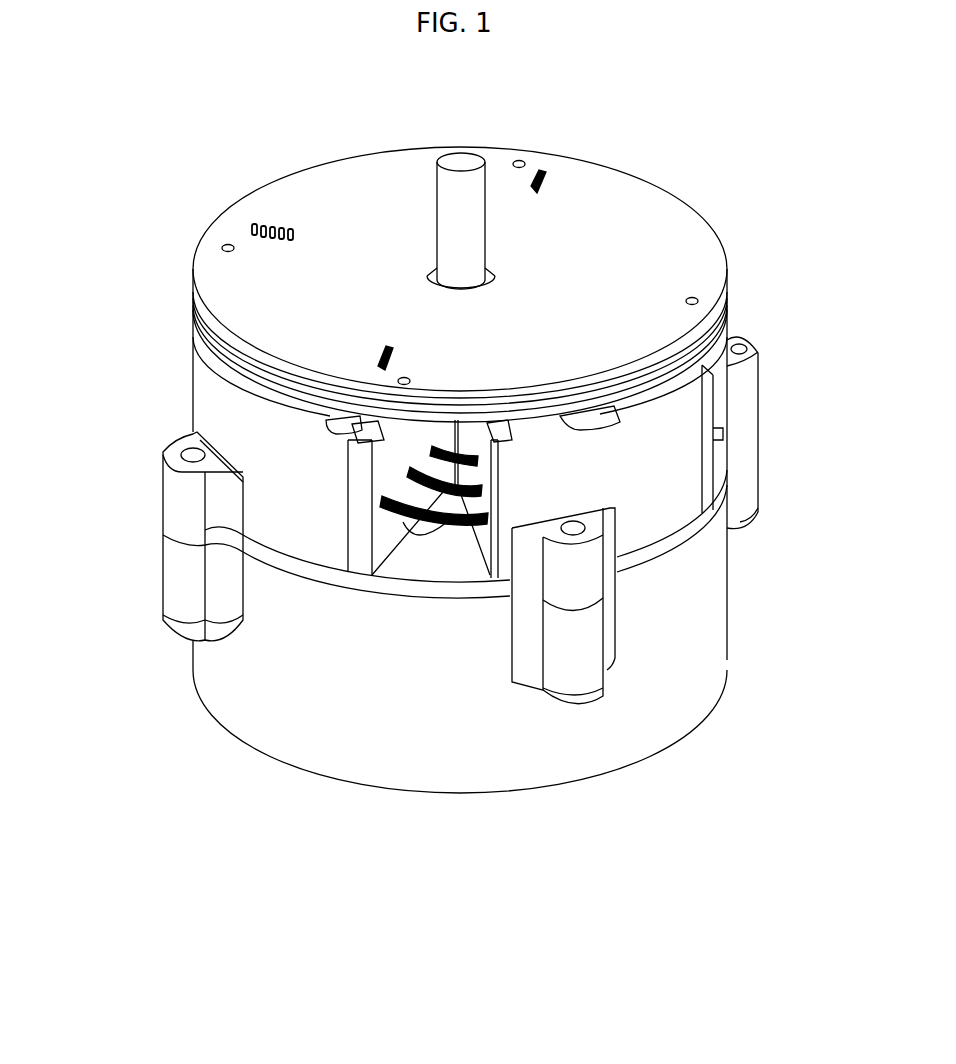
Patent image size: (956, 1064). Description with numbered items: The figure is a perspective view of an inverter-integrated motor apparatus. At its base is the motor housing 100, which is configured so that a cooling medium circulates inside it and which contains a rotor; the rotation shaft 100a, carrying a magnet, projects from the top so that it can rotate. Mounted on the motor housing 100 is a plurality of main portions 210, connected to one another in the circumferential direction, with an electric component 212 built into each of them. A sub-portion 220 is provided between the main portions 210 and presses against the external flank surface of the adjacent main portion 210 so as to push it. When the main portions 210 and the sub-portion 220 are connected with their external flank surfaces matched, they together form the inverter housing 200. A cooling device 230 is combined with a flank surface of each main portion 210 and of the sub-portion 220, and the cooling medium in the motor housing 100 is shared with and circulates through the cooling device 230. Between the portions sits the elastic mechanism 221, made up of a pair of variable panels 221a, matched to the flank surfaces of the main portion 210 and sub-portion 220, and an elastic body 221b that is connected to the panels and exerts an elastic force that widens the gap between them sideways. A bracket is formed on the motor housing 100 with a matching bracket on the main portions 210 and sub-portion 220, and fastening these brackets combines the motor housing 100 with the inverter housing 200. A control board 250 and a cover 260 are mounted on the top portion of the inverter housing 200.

The motor housing 100 is at (752, 617).
The rotation shaft 100a is at (462, 154).
The inverter housing 200 is at (170, 366).
The main portion 210 is at (235, 418).
The electric component 212 is at (262, 392).
The sub-portion 220 is at (635, 458).
The elastic mechanism 221 is at (416, 669).
The variable panel 221a is at (390, 525).
The elastic body 221b is at (447, 523).
The cooling device 230 is at (352, 422).
The control board 250 is at (608, 240).
The cover 260 is at (735, 368).
The element bracket is at (585, 586).